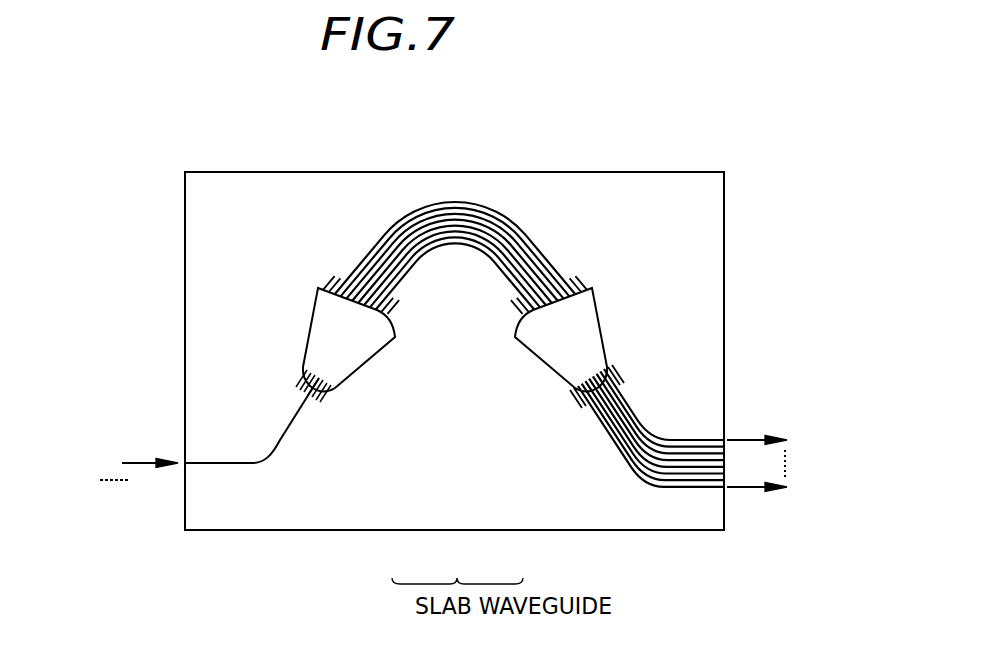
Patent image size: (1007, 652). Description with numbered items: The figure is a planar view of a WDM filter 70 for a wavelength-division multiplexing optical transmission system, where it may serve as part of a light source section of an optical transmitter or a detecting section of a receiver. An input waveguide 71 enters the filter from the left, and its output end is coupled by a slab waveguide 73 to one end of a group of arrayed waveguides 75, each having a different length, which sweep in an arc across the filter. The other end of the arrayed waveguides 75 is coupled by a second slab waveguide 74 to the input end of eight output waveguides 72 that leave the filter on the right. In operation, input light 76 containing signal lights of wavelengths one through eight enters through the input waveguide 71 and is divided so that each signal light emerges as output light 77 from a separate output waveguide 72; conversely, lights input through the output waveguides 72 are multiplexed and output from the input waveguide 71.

The WDM filter 70 is at (185, 173).
The input waveguide 71 is at (213, 462).
The output waveguides 72 is at (697, 432).
The slab waveguide 73 is at (363, 367).
The slab waveguide 74 is at (540, 383).
The arrayed waveguides 75 is at (452, 187).
The input light 76 is at (130, 462).
The output light 77 is at (806, 509).